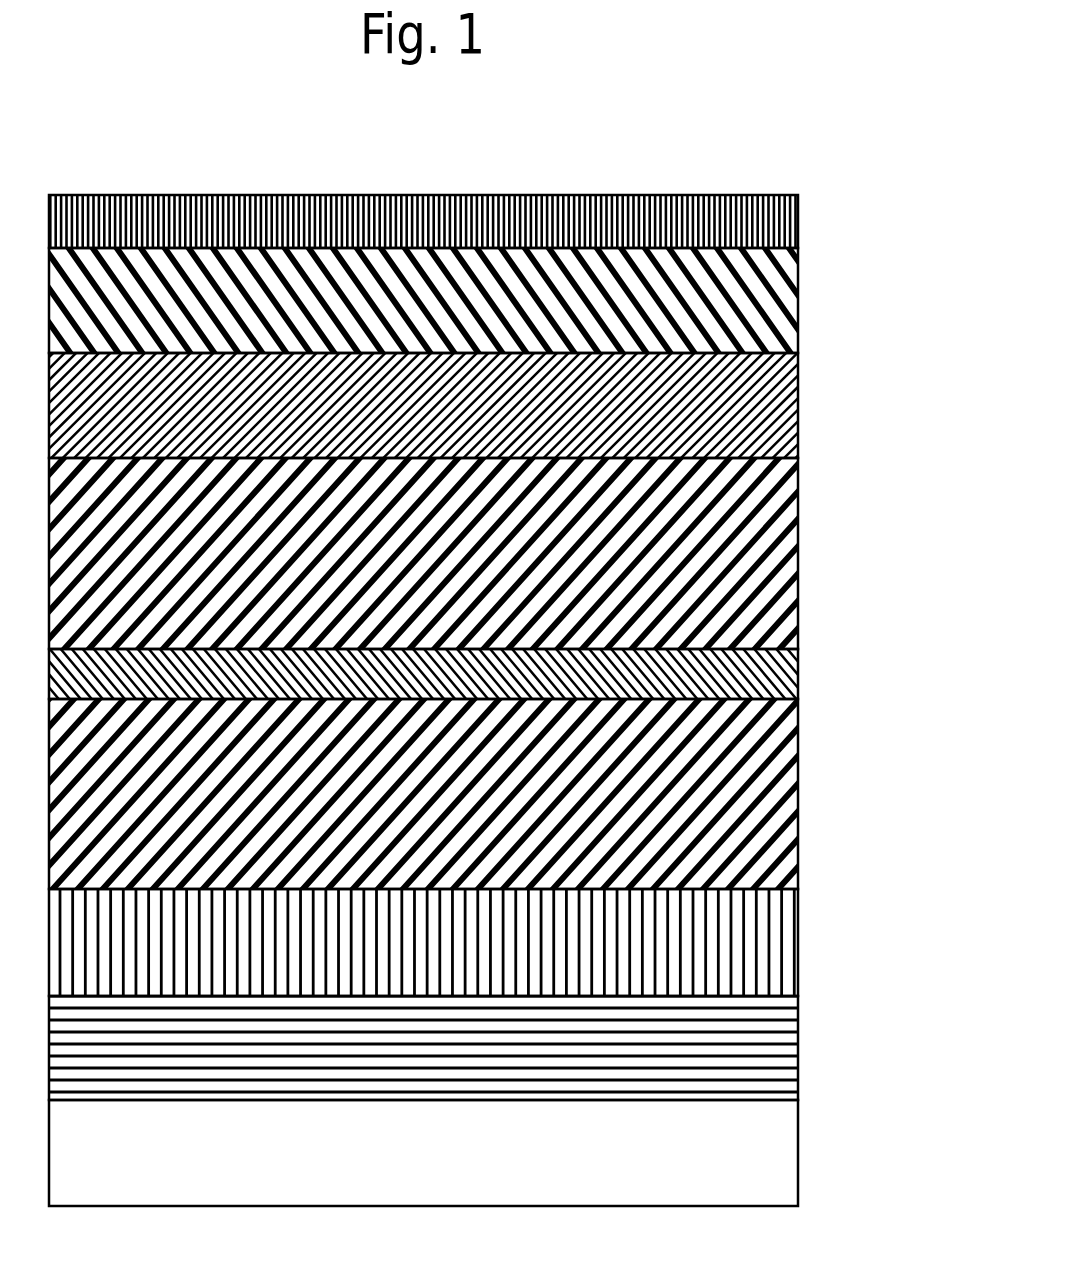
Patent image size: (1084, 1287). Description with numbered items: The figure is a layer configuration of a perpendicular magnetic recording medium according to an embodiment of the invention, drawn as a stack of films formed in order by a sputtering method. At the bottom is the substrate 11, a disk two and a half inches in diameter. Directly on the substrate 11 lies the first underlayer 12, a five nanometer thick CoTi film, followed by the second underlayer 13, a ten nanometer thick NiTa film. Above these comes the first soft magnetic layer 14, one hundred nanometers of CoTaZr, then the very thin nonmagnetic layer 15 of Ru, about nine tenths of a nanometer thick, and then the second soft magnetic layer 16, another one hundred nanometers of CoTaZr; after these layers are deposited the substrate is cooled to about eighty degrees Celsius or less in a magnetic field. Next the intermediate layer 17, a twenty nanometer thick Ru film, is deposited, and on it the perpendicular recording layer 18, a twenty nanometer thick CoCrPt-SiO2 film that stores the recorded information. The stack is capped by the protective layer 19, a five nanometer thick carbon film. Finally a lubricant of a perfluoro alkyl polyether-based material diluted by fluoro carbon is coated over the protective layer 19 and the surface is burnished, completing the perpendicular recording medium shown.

The substrate 11 is at (742, 1157).
The first underlayer 12 is at (743, 1070).
The second underlayer 13 is at (743, 963).
The first soft magnetic layer 14 is at (786, 808).
The nonmagnetic layer 15 is at (765, 685).
The second soft magnetic layer 16 is at (788, 567).
The intermediate layer 17 is at (747, 430).
The perpendicular recording layer 18 is at (750, 320).
The protective layer 19 is at (760, 240).